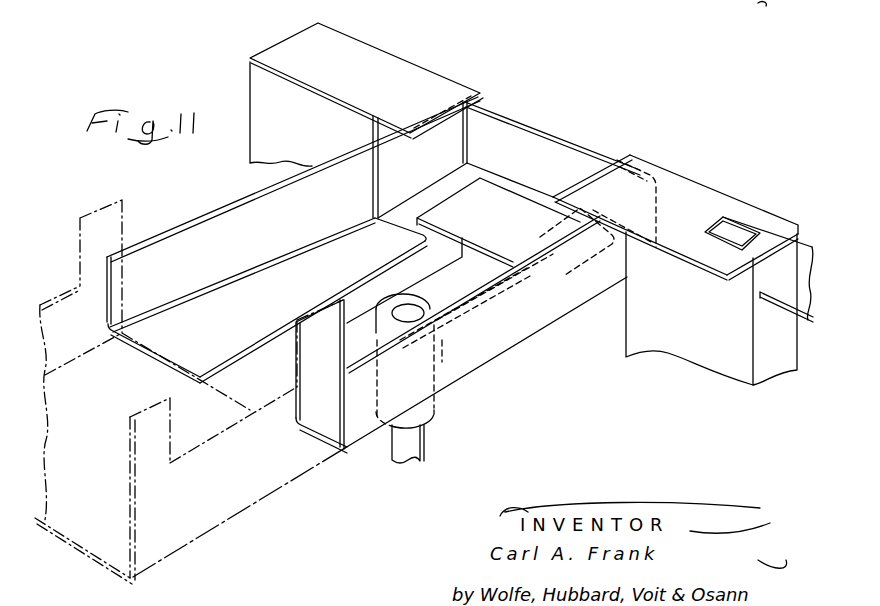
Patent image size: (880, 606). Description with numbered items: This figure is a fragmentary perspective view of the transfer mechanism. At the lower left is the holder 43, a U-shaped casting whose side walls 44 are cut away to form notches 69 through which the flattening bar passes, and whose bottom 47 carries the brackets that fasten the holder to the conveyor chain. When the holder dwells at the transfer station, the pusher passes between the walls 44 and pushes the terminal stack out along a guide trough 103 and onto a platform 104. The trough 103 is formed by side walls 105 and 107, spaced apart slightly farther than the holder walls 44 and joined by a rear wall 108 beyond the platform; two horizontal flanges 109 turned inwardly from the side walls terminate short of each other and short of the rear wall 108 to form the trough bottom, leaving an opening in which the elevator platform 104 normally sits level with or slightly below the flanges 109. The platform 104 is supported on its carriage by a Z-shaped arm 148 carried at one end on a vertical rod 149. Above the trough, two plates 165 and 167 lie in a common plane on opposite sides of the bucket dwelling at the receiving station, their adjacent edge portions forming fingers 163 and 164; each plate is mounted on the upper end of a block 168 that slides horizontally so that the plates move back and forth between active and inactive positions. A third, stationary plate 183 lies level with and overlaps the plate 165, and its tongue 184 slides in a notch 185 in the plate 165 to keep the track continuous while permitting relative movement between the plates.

The base channel 43 is at (263, 495).
The side walls 44 is at (140, 470).
The bottom 47 is at (74, 541).
The notches 69 is at (173, 417).
The guide trough 103 is at (489, 357).
The platform 104 is at (512, 198).
The side wall 105 is at (202, 230).
The side wall 107 is at (340, 378).
The rear wall 108 is at (571, 147).
The horizontal flanges 109 is at (163, 353).
The Z-shaped arm 148 is at (437, 399).
The vertical rod 149 is at (424, 440).
The finger 163 is at (627, 158).
The finger 164 is at (479, 95).
The plate 165 is at (687, 192).
The plate 167 is at (391, 70).
The block 168 is at (257, 94).
The stationary plate 183 is at (791, 299).
The tongue 184 is at (752, 241).
The notch 185 is at (716, 232).